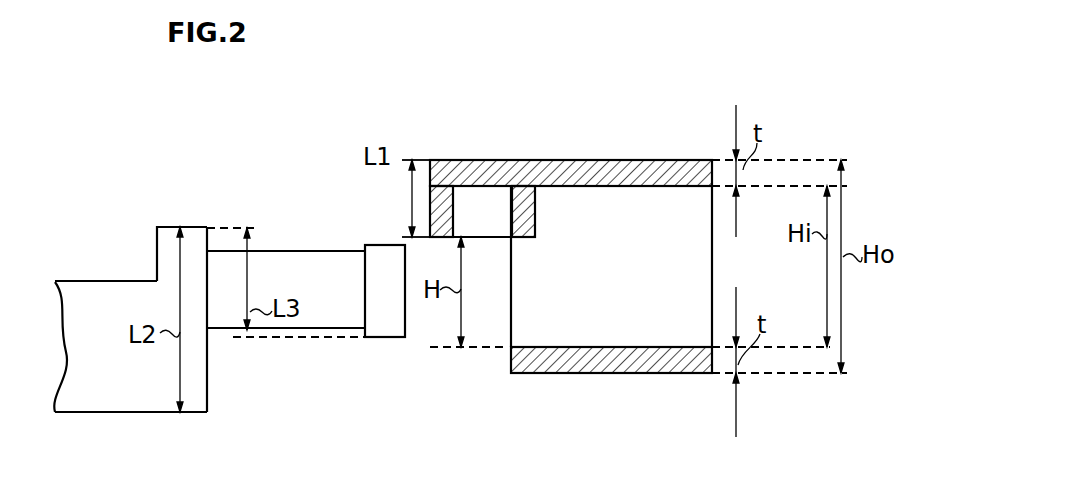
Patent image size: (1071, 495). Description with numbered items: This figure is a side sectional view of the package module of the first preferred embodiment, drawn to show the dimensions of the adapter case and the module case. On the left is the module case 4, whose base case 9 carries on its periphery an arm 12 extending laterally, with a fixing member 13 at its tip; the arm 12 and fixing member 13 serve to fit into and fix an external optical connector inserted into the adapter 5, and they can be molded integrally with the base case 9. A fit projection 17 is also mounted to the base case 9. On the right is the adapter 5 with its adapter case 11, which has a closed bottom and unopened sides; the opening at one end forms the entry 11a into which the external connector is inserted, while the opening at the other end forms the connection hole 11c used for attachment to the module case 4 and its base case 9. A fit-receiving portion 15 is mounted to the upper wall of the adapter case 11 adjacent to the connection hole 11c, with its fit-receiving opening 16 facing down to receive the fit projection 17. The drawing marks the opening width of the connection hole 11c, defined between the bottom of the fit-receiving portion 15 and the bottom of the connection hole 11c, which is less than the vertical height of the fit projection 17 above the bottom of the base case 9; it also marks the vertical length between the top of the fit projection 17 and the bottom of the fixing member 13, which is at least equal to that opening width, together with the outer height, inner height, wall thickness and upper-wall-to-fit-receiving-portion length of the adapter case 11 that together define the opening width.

The module case 4 is at (120, 405).
The base case 9 is at (152, 405).
The fit projection 17 is at (167, 235).
The arm 12 is at (273, 267).
The fixing member 13 is at (387, 257).
The adapter 5 is at (609, 254).
The adapter case 11 is at (635, 160).
The fit-receiving portion 15 is at (535, 217).
The fit-receiving opening 16 is at (472, 235).
The entry 11a is at (712, 267).
The connection hole 11c is at (485, 328).